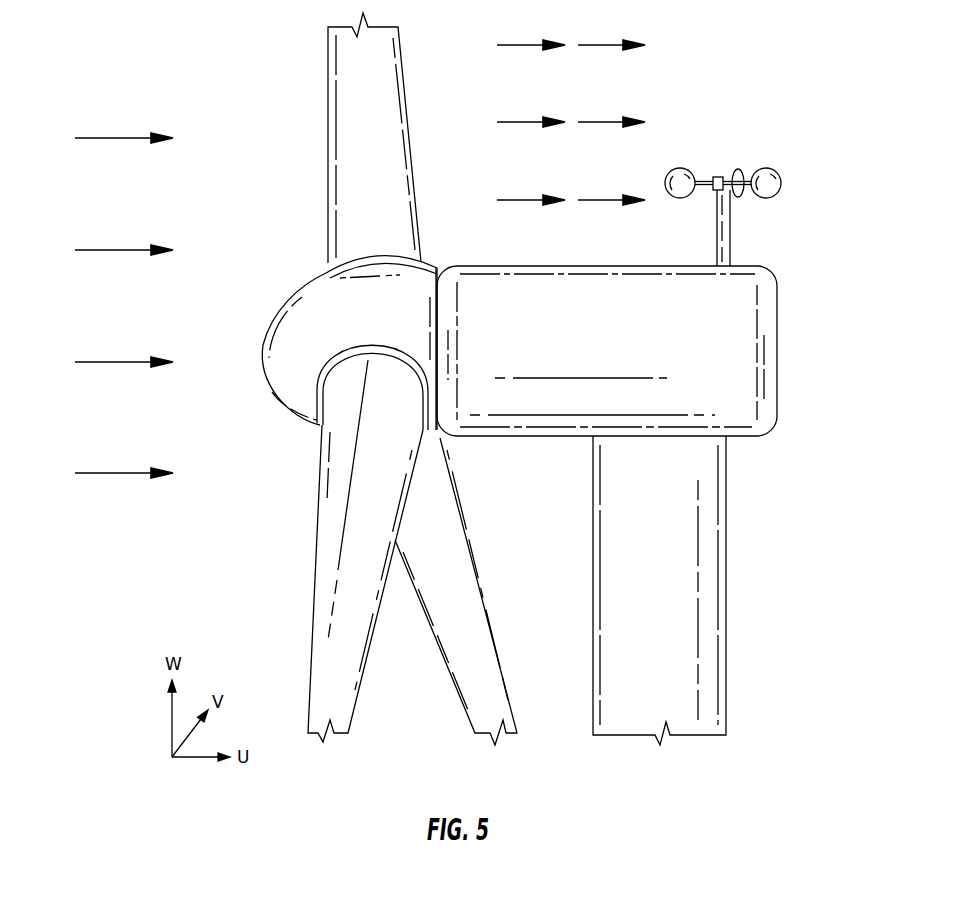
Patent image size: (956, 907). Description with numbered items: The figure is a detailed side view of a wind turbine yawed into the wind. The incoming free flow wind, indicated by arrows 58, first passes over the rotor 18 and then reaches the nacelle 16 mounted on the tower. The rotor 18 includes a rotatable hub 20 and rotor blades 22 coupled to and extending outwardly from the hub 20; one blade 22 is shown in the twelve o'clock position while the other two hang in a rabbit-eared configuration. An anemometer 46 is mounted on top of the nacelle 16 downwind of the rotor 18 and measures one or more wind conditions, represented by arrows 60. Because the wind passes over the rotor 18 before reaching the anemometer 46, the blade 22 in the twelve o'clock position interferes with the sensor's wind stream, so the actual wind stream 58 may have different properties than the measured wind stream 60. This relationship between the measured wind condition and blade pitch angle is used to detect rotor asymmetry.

The nacelle 16 is at (746, 441).
The rotor 18 is at (294, 284).
The rotatable hub 20 is at (437, 278).
The rotor blade 22 is at (343, 97).
The anemometer 46 is at (708, 225).
The free flow wind 58 is at (124, 361).
The measured wind 60 is at (610, 121).